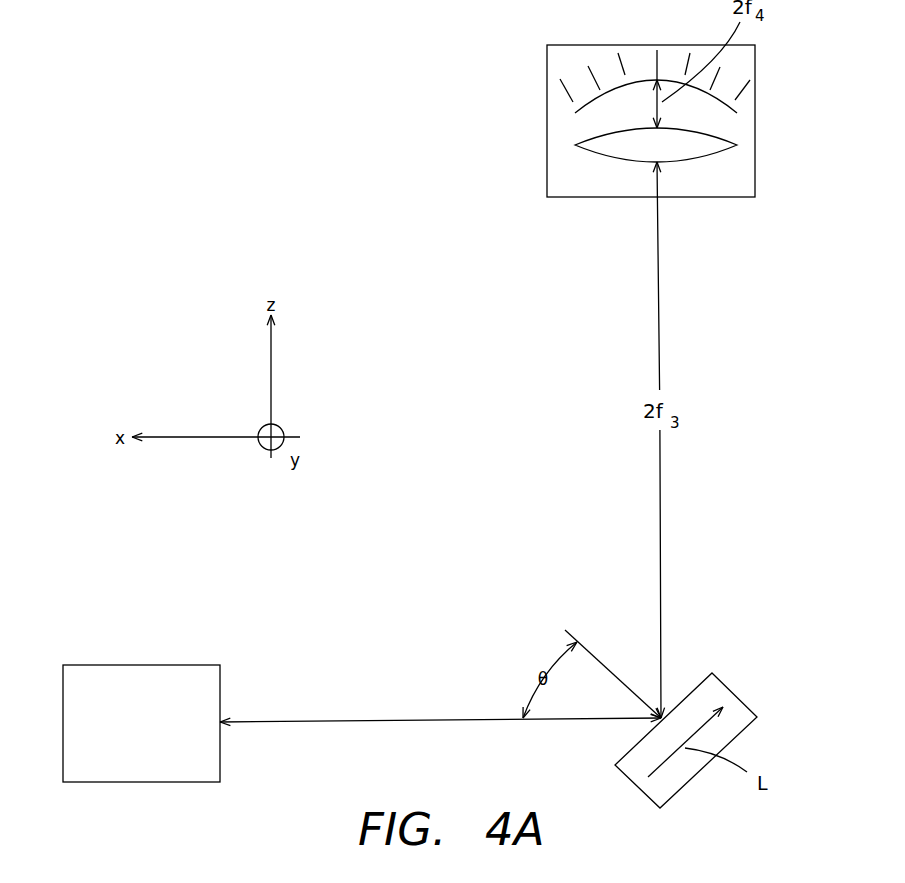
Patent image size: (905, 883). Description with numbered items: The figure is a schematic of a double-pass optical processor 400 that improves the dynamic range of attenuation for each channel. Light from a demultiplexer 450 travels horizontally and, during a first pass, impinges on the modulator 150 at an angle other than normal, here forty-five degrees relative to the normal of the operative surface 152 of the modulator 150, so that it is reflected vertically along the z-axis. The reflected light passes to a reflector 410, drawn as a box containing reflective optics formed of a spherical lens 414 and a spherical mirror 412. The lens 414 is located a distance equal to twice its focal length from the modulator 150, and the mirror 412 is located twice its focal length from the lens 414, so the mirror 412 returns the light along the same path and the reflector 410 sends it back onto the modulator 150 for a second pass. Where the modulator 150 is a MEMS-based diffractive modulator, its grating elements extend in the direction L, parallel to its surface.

The optical processor 400 is at (335, 80).
The reflector 410 is at (547, 197).
The spherical mirror 412 is at (737, 112).
The spherical lens 414 is at (575, 143).
The demultiplexer 450 is at (193, 665).
The modulator 150 is at (720, 680).
The operative surface 152 is at (622, 755).